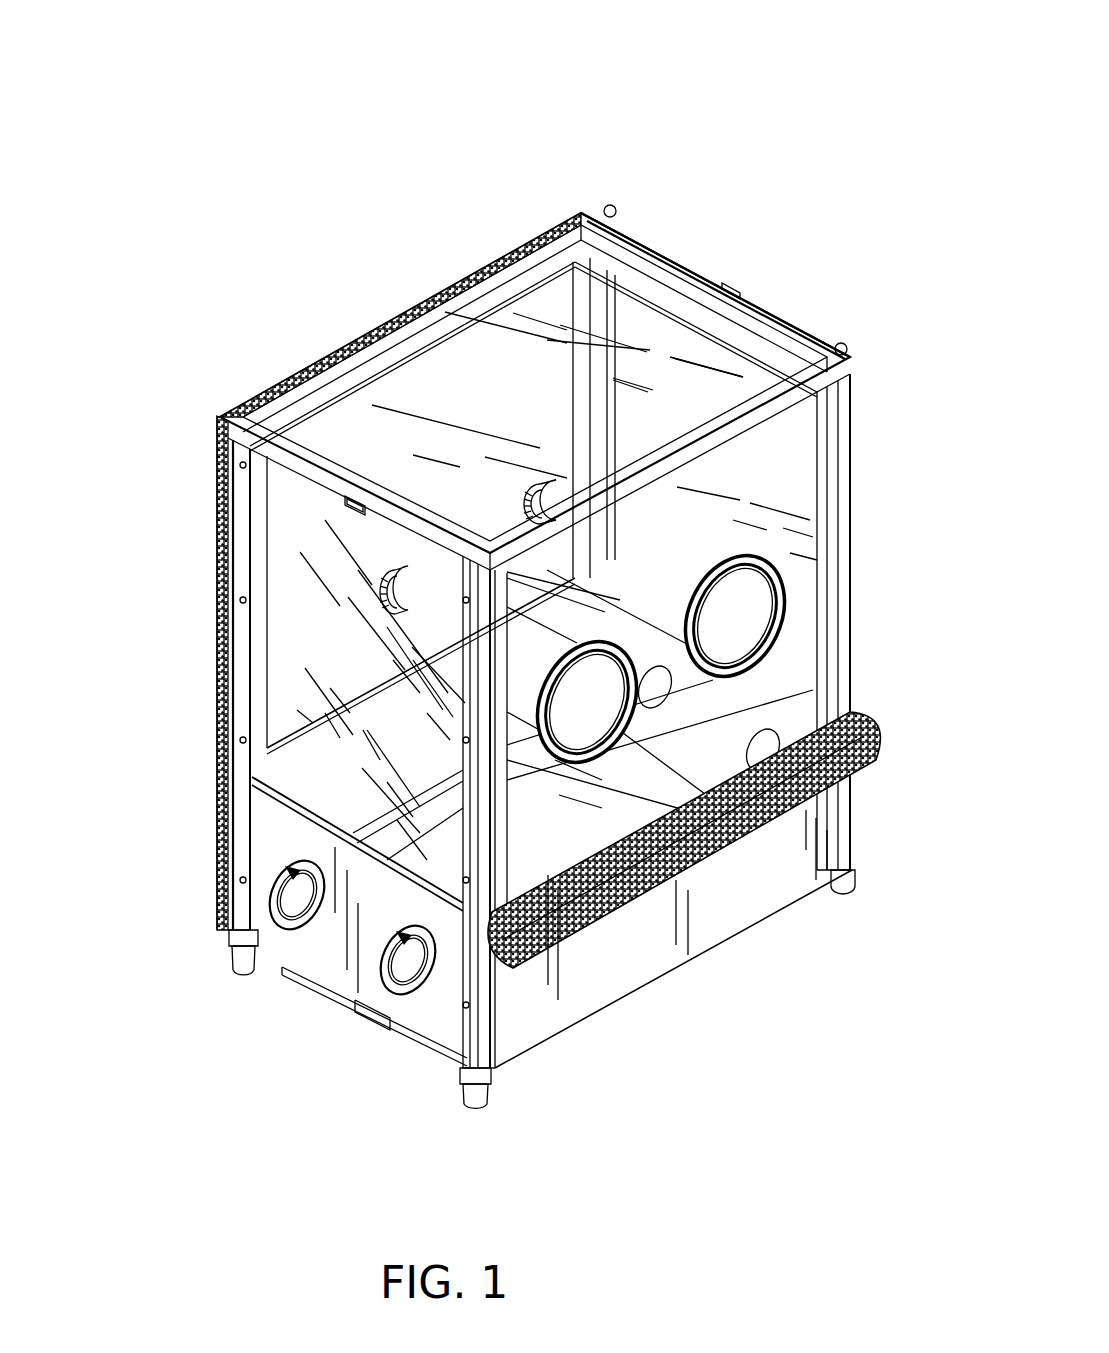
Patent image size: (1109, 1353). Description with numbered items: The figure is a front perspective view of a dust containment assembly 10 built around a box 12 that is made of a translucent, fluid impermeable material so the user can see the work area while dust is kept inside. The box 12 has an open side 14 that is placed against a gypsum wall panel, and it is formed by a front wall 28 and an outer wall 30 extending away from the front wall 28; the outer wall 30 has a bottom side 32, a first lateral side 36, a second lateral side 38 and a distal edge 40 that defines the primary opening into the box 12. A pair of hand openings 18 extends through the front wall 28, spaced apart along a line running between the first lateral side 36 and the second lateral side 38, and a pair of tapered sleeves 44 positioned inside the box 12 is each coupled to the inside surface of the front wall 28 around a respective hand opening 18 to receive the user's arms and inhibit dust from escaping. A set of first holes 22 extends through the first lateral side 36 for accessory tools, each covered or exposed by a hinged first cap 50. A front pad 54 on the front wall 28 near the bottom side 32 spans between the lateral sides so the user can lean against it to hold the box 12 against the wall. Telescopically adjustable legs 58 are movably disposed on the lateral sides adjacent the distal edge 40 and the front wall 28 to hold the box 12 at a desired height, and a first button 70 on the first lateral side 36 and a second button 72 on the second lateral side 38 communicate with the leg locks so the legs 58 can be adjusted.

The dust containment assembly 10 is at (766, 112).
The box 12 is at (838, 442).
The open side 14 is at (176, 492).
The hand openings 18 is at (753, 654).
The first holes 22 is at (410, 940).
The front wall 28 is at (790, 548).
The outer wall 30 is at (305, 668).
The bottom side 32 is at (548, 1048).
The first lateral side 36 is at (288, 553).
The second lateral side 38 is at (790, 325).
The distal edge 40 is at (296, 372).
The sleeves 44 is at (428, 590).
The first caps 50 is at (293, 903).
The front pad 54 is at (887, 757).
The legs 58 is at (614, 207).
The first button 70 is at (355, 496).
The second button 72 is at (732, 287).